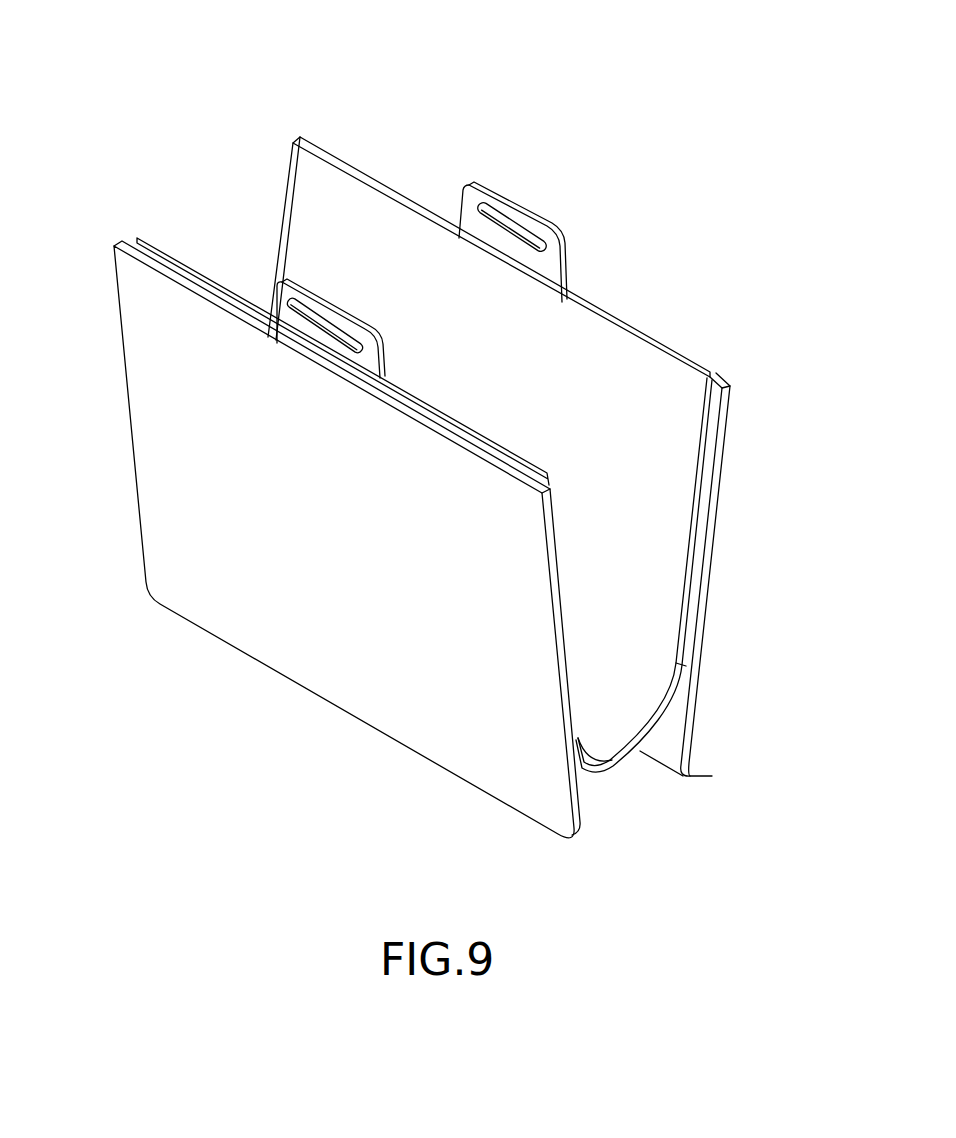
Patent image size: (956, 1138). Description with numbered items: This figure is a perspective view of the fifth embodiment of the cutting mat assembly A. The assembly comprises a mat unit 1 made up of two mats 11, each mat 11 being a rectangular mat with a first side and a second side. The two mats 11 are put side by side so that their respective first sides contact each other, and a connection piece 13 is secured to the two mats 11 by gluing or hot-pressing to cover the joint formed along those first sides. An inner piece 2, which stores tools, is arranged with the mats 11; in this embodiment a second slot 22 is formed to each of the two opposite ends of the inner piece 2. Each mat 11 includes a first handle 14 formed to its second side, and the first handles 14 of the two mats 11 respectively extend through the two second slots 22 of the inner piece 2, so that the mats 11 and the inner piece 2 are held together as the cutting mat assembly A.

The mat unit 1 is at (440, 487).
The inner piece 2 is at (466, 557).
The mat 11 is at (140, 482).
The connection piece 13 is at (613, 773).
The first handle 14 is at (380, 350).
The second slot 22 is at (328, 368).
The cutting mat assembly A is at (170, 110).